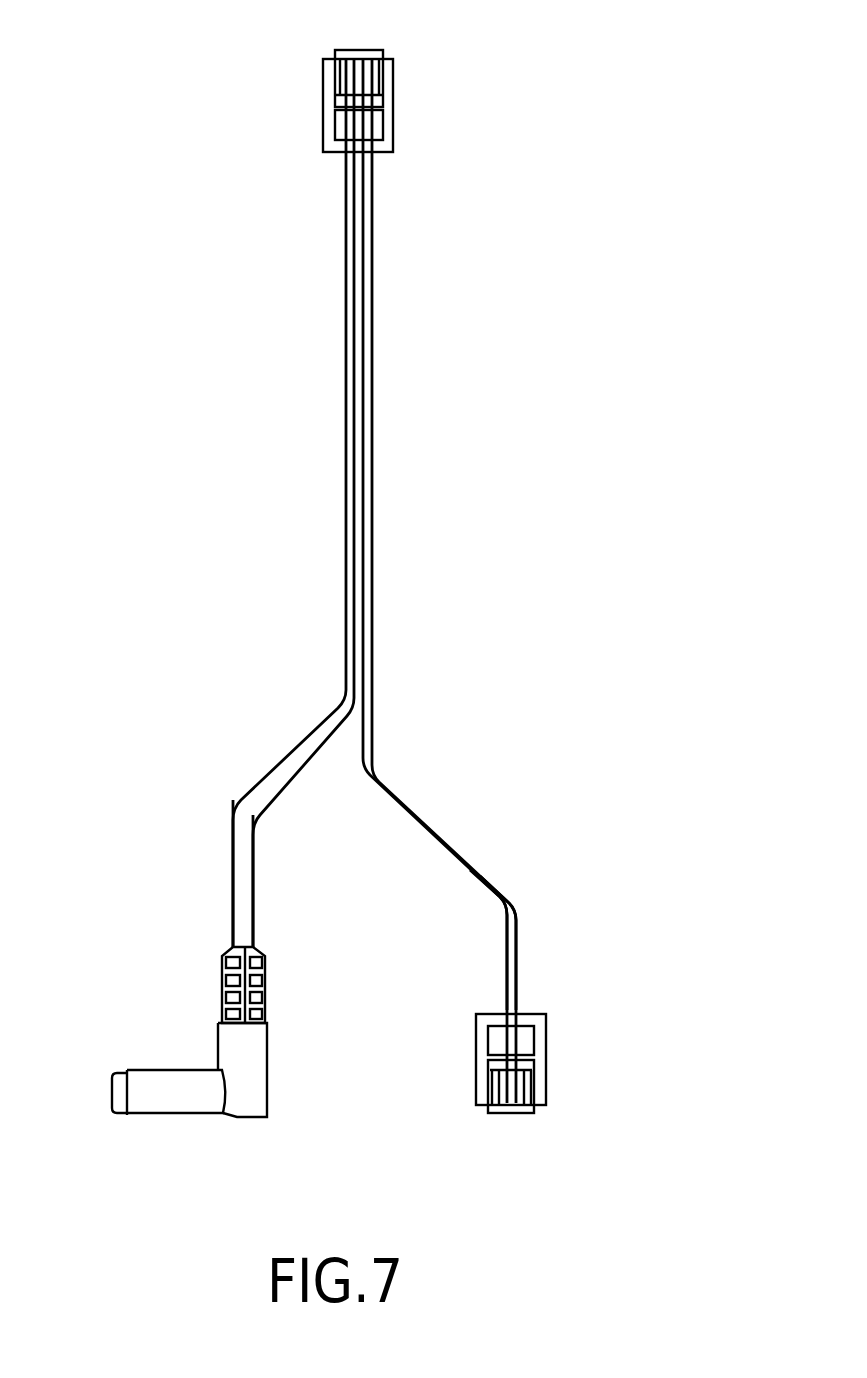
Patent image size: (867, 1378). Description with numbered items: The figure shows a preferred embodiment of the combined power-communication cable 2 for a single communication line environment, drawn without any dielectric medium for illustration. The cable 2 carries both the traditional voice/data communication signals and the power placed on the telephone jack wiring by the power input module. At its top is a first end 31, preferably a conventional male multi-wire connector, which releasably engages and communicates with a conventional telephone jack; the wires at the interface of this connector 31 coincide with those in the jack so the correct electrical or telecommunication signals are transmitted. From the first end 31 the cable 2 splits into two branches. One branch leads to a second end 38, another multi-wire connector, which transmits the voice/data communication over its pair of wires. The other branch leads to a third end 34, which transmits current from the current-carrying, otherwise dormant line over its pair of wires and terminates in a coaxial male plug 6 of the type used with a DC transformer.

The combined power-communication cable 2 is at (423, 660).
The first end 31 is at (393, 83).
The second end 38 is at (555, 1047).
The third end 34 is at (173, 1150).
The coaxial male plug 6 is at (148, 1103).